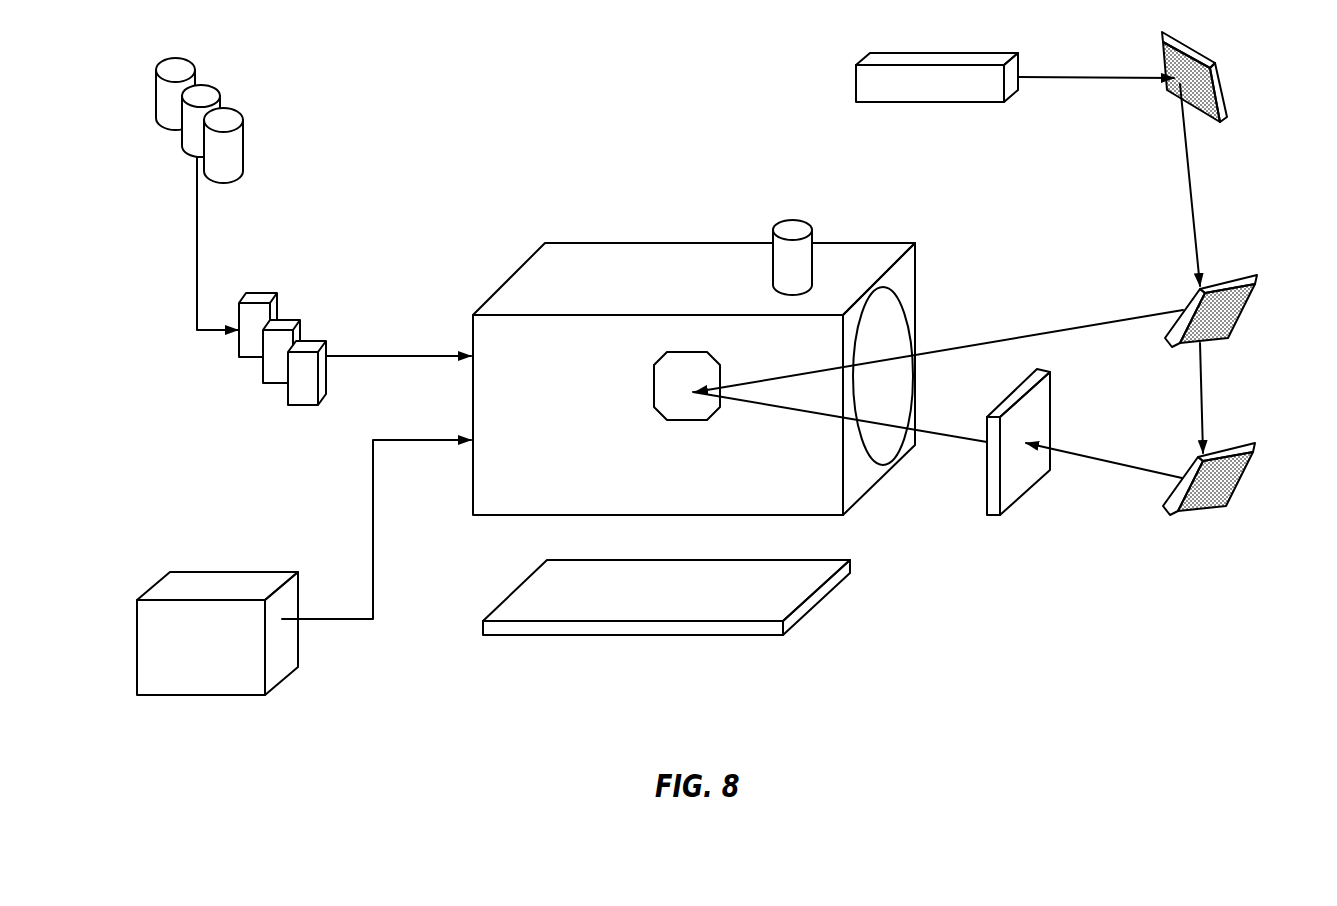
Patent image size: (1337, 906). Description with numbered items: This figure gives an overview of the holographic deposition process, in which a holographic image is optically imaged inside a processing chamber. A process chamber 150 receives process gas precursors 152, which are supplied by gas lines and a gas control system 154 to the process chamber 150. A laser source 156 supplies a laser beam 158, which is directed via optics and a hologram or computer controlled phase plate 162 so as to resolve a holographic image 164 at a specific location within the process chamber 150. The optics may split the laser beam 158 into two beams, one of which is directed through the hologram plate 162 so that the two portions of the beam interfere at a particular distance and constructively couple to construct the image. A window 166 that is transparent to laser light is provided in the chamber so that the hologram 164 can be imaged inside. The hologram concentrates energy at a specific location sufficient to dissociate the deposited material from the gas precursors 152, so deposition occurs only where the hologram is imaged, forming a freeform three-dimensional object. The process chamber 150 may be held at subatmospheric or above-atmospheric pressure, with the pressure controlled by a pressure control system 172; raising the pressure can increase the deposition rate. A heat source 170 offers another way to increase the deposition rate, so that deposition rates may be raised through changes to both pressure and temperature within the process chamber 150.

The process chamber 150 is at (882, 243).
The process gas precursors 152 is at (243, 153).
The gas control system 154 is at (288, 315).
The laser source 156 is at (968, 53).
The laser beam 158 is at (1117, 78).
The hologram or computer controlled phase plate 162 is at (1022, 498).
The holographic image 164 is at (705, 381).
The window 166 is at (909, 317).
The heat source 170 is at (620, 637).
The pressure control system 172 is at (223, 570).